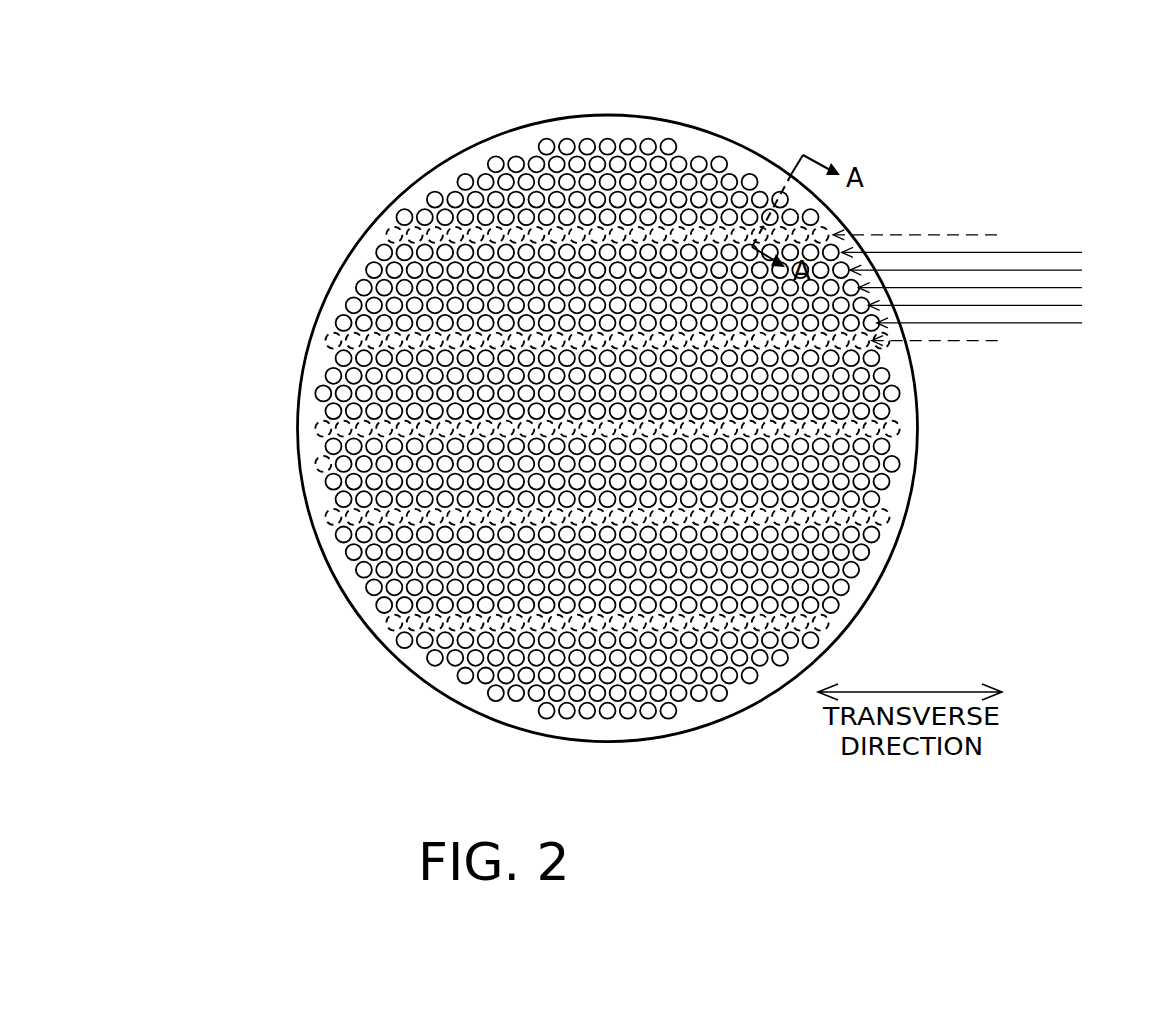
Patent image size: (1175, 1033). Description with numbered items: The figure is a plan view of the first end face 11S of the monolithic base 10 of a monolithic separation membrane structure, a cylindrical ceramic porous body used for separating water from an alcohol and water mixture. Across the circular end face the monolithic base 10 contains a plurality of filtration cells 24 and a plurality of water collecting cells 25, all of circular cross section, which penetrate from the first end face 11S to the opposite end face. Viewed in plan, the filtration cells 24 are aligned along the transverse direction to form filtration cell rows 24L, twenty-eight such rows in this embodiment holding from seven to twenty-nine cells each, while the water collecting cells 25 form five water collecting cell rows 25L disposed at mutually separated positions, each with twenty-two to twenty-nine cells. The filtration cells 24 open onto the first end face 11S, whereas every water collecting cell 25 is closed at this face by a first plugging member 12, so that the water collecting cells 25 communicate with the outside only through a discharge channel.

The monolithic base 10 is at (297, 458).
The first end face 11S is at (680, 147).
The first plugging member 12 is at (350, 343).
The filtration cell 24 is at (367, 263).
The water collecting cell 25 is at (348, 342).
The filtration cell row 24L is at (1088, 252).
The water collecting cell row 25L is at (952, 289).